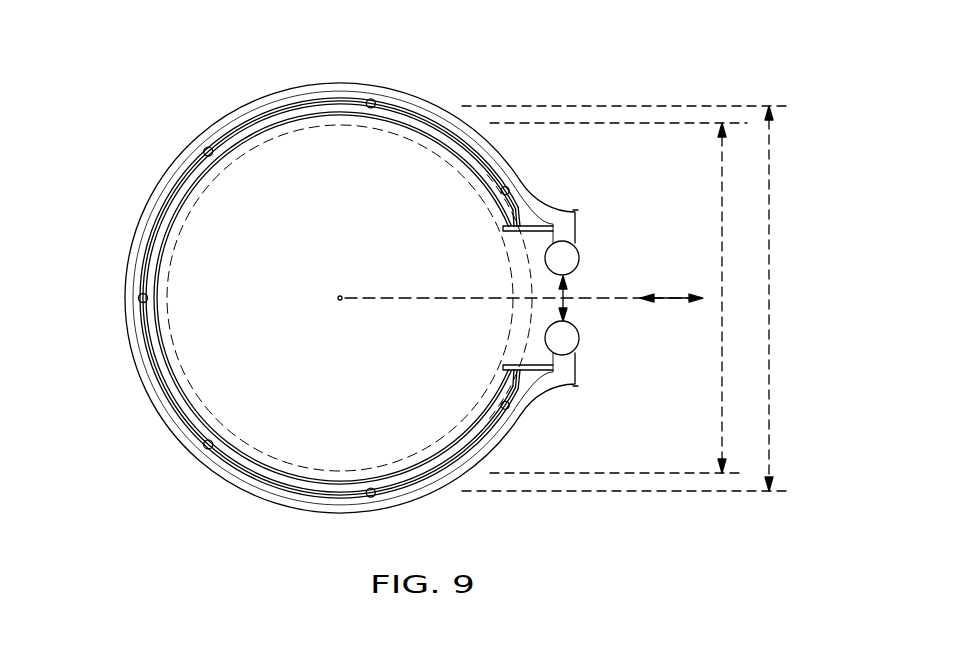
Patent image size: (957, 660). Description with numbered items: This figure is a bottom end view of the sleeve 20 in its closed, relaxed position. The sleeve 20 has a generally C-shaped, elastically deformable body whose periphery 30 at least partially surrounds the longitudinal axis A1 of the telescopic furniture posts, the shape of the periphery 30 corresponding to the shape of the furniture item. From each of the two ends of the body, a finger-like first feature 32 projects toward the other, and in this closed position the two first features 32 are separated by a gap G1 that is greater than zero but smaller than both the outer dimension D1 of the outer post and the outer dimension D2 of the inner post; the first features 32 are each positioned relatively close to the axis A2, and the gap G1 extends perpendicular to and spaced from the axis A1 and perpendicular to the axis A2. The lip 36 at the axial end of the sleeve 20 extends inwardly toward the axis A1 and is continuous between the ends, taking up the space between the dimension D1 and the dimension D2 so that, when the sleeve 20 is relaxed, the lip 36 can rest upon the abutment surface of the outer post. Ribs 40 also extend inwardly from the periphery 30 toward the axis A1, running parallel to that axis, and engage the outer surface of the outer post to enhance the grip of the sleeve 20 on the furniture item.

The sleeve 20 is at (192, 88).
The periphery 30 is at (136, 242).
The first features 32 is at (566, 257).
The lip 36 is at (296, 92).
The ribs 40 is at (377, 112).
The axis A1 is at (340, 298).
The axis A2 is at (670, 298).
The gap G1 is at (568, 302).
The outer dimension D1 is at (775, 231).
The outer dimension D2 is at (730, 231).